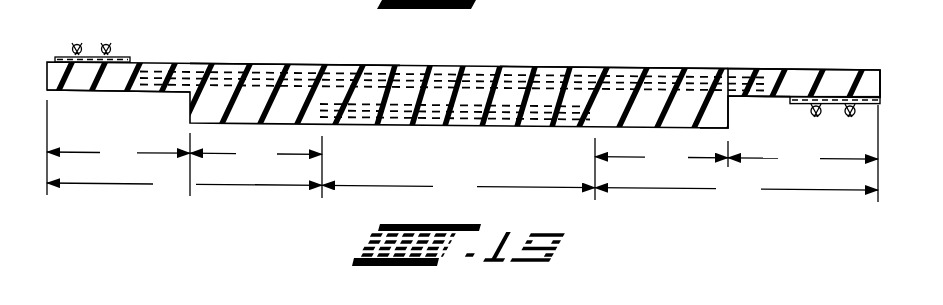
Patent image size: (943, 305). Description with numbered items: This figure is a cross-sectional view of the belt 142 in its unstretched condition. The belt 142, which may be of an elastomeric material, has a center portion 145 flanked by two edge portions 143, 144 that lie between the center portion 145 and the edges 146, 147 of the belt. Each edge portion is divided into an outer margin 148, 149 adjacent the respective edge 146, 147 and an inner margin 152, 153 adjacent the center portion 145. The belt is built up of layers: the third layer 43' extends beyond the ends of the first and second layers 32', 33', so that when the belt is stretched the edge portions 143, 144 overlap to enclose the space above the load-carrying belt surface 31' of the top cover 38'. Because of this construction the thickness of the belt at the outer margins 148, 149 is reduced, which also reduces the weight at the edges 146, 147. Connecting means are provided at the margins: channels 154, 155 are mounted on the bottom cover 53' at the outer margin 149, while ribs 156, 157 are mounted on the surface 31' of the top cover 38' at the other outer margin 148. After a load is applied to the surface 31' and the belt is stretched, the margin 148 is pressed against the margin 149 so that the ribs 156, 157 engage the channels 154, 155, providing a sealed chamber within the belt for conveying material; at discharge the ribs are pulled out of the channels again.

The load-carrying belt surface 31' is at (460, 82).
The top cover 38' is at (295, 42).
The belt 142 is at (588, 68).
The first layer 32' is at (720, 81).
The second layer 33' is at (759, 65).
The third layer 43' is at (804, 66).
The edge 147 is at (881, 72).
The bottom cover 53' is at (854, 94).
The channel 154 is at (848, 115).
The channel 155 is at (807, 111).
The edge 146 is at (68, 89).
The rib 156 is at (78, 43).
The rib 157 is at (107, 43).
The outer margin 148 is at (118, 152).
The inner margin 152 is at (256, 154).
The inner margin 153 is at (661, 157).
The outer margin 149 is at (803, 159).
The edge portion 143 is at (184, 184).
The center portion 145 is at (458, 187).
The edge portion 144 is at (736, 189).